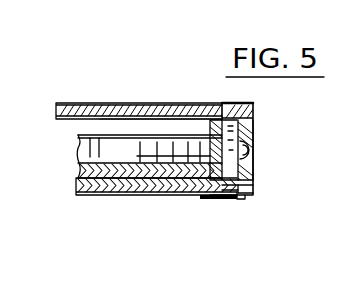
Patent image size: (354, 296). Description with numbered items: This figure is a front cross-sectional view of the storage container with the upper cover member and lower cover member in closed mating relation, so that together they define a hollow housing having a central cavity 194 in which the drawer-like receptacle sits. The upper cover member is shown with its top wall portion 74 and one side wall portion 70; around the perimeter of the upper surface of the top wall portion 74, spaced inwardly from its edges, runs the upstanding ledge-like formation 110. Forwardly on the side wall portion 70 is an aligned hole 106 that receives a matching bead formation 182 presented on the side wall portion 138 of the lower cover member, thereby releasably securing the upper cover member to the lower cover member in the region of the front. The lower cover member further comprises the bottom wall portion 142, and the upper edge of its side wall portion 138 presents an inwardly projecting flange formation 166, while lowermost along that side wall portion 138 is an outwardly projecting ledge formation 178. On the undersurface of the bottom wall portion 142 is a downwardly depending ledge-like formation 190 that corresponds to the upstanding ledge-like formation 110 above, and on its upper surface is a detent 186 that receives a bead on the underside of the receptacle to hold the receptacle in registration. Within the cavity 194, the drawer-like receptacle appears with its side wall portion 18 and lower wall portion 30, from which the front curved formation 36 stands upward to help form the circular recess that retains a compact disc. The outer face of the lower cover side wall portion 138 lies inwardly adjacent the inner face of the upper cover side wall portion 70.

The side wall portion 18 is at (163, 150).
The lower wall portion 30 is at (96, 170).
The front curved formation 36 is at (90, 145).
The side wall portion 70 is at (256, 111).
The top wall portion 74 is at (125, 112).
The aligned hole 106 is at (255, 142).
The upstanding ledge-like formation 110 is at (222, 103).
The side wall portion 138 is at (192, 112).
The bottom wall portion 142 is at (118, 190).
The flange formation 166 is at (200, 105).
The outwardly projecting ledge formation 178 is at (254, 189).
The bead formation 182 is at (253, 155).
The detent 186 is at (217, 198).
The downwardly depending ledge-like formation 190 is at (233, 199).
The central cavity 194 is at (107, 123).